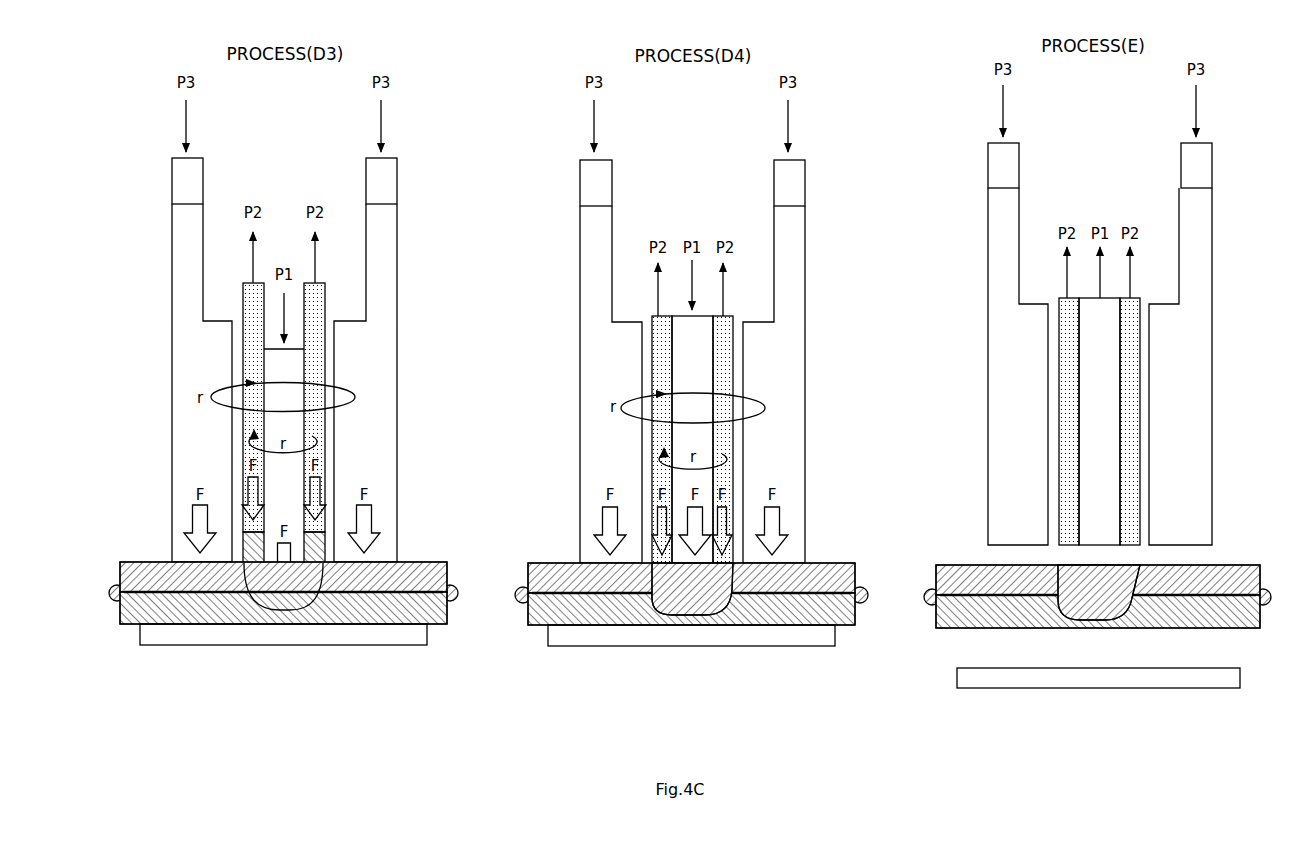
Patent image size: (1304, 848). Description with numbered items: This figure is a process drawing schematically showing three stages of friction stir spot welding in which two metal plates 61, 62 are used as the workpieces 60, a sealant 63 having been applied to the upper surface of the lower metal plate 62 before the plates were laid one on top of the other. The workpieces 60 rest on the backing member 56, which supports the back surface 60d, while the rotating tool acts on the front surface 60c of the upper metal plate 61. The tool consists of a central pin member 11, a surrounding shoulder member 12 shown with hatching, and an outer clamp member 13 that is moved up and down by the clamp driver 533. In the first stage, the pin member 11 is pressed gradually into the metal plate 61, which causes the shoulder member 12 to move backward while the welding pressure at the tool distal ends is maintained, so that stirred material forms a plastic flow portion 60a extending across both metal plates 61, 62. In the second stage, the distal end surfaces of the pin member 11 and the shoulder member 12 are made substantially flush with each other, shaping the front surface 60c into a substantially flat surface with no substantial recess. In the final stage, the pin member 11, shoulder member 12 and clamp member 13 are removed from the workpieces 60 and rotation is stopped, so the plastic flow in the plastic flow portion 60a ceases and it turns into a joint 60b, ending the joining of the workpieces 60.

The clamp driver 533 is at (172, 172).
The clamp member 13 is at (180, 282).
The shoulder member 12 is at (252, 367).
The pin member 11 is at (277, 423).
The workpiece 60 is at (146, 556).
The plastic flow portion 60a is at (287, 630).
The joint 60b is at (1100, 625).
The front surface 60c is at (423, 553).
The back surface 60d is at (437, 627).
The metal plate 61 is at (133, 573).
The metal plate 62 is at (132, 608).
The sealant 63 is at (452, 602).
The backing member 56 is at (182, 635).